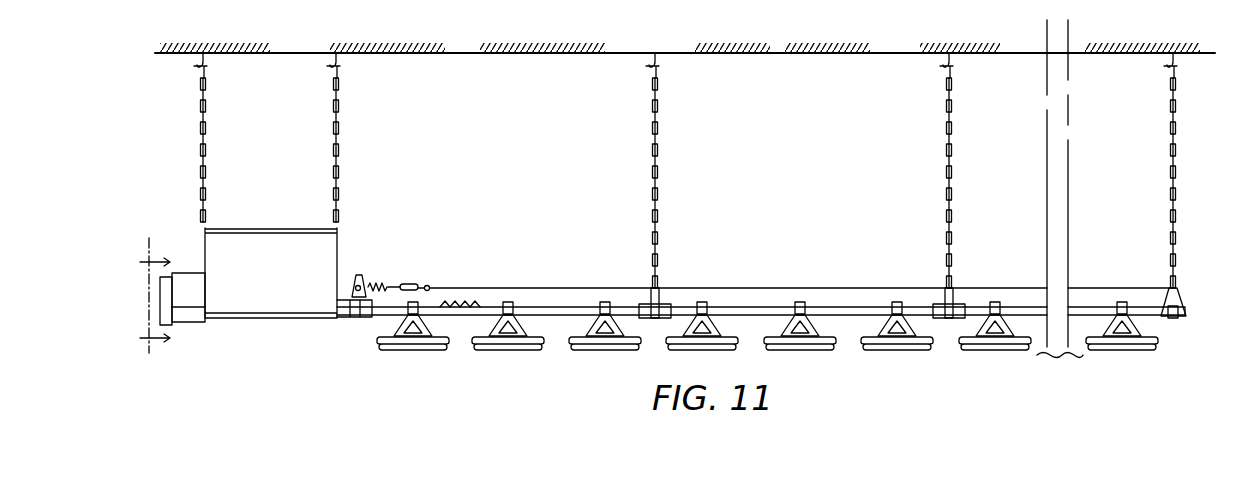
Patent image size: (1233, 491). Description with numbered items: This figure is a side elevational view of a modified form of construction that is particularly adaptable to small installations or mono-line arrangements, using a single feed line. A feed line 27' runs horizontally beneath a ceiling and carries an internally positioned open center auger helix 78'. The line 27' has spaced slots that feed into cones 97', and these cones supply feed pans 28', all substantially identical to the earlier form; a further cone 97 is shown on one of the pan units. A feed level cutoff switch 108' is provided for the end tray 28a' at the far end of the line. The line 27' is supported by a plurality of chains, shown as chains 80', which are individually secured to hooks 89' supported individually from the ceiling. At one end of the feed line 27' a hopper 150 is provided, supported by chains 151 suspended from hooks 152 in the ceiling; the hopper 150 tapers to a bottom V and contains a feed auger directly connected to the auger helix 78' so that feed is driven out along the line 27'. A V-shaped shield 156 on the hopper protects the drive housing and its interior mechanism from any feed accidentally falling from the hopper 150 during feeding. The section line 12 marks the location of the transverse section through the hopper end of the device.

The hooks 152 is at (208, 67).
The chains 151 is at (208, 182).
The hopper 150 is at (332, 262).
The V-shaped shield 156 is at (196, 282).
The section line 12 is at (158, 299).
The feed line 27' is at (761, 284).
The open center auger helix 78' is at (483, 279).
The cones 97' is at (531, 319).
The feed pans 28' is at (718, 360).
The bracket 97 is at (898, 301).
The hooks 89' is at (820, 46).
The chains 80' is at (826, 183).
The feed level cutoff switch 108' is at (1147, 319).
The end tray 28a' is at (1122, 362).